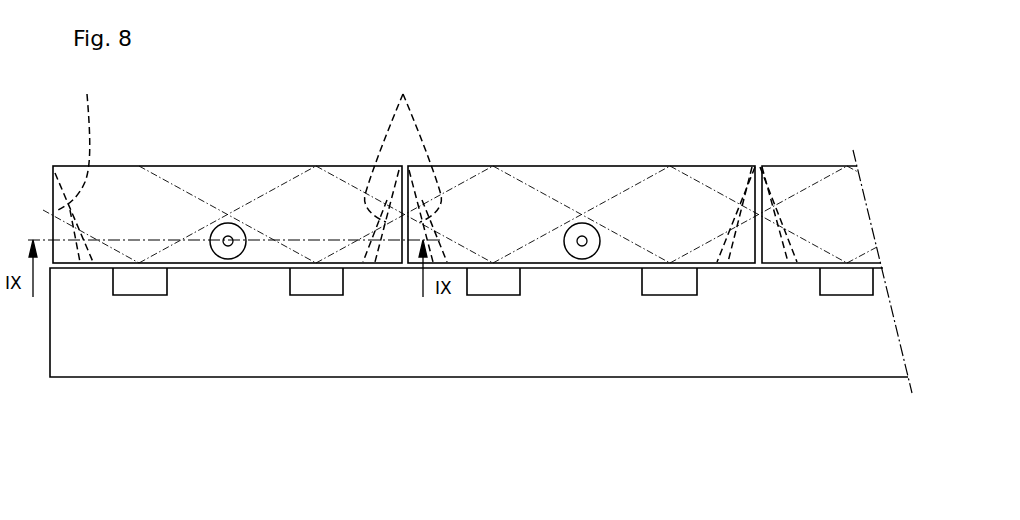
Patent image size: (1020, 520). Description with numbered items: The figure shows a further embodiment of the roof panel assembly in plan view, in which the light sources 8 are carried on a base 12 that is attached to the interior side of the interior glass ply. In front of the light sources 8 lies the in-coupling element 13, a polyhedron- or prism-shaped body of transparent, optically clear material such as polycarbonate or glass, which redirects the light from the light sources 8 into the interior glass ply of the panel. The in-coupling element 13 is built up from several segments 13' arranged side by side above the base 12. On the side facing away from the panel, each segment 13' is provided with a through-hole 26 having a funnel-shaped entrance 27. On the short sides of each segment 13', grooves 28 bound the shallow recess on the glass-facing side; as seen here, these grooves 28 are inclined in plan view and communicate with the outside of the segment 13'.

The light source 8 is at (314, 290).
The base 12 is at (426, 337).
The in-coupling element 13 is at (821, 164).
The segment 13' is at (404, 165).
The through-hole 26 is at (228, 235).
The funnel-shaped entrance 27 is at (240, 233).
The groove 28 is at (426, 164).